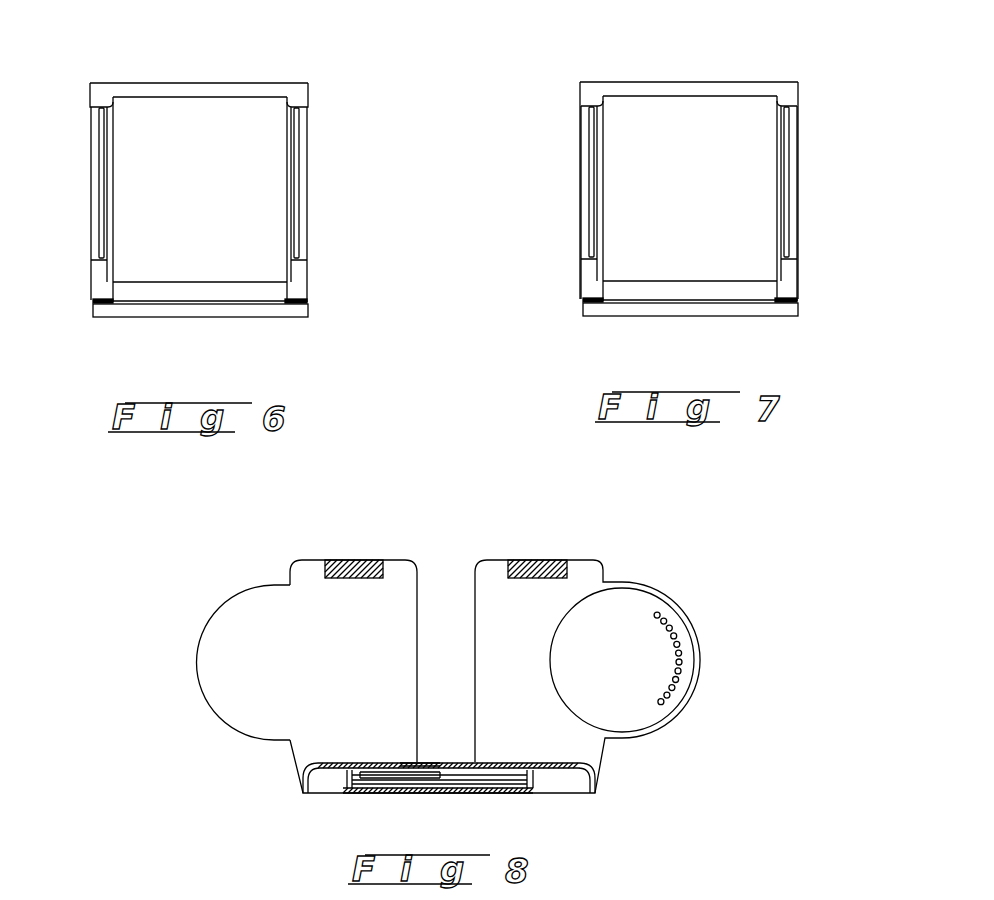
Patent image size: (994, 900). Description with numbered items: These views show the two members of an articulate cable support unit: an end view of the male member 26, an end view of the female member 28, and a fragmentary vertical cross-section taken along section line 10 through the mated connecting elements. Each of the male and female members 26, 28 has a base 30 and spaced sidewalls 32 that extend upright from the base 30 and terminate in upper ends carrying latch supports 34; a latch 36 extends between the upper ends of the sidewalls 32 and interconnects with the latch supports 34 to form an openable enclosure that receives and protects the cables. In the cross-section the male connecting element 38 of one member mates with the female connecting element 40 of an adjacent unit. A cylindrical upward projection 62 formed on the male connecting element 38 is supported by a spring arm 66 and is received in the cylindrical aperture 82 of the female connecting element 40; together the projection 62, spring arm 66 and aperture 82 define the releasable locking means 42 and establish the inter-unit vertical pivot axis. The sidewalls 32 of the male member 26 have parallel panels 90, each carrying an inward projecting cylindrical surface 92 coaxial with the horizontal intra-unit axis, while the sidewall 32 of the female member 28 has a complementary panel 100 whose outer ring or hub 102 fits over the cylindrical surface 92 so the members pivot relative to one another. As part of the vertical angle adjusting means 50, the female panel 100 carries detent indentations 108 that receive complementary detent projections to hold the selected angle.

In FIG. 8, the section line 10- 10 is at (338, 742).
In FIG. 8, the male member 26 is at (540, 637).
In FIG. 7, the female member 28 is at (814, 111).
In FIG. 8, the female member 28 is at (335, 645).
In FIG. 6, the base 30 is at (193, 295).
In FIG. 7, the base 30 is at (683, 293).
In FIG. 6, the sidewalls 32 is at (97, 275).
In FIG. 7, the sidewalls 32 is at (583, 272).
In FIG. 6, the latch supports 34 is at (92, 94).
In FIG. 7, the latch supports 34 is at (582, 96).
In FIG. 6, the latch 36 is at (200, 84).
In FIG. 7, the latch 36 is at (690, 83).
In FIG. 8, the latch 36 is at (350, 575).
In FIG. 8, the male connecting element 38 is at (380, 777).
In FIG. 8, the female connecting element 40 is at (500, 768).
In FIG. 8, the releasable locking means 42 is at (440, 744).
In FIG. 8, the vertical angle adjusting means 50 is at (663, 683).
In FIG. 8, the cylindrical upward projection 62 is at (420, 770).
In FIG. 8, the spring arm 66 is at (493, 793).
In FIG. 8, the cylindrical aperture 82 is at (415, 762).
In FIG. 6, the panels 90 is at (93, 190).
In FIG. 8, the panels 90 is at (213, 688).
In FIG. 6, the inward projecting cylindrical surface 92 is at (297, 192).
In FIG. 7, the panel 100 is at (600, 170).
In FIG. 8, the panel 100 is at (625, 605).
In FIG. 8, the outer ring or hub 102 is at (680, 607).
In FIG. 8, the detent indentations 108 is at (690, 673).